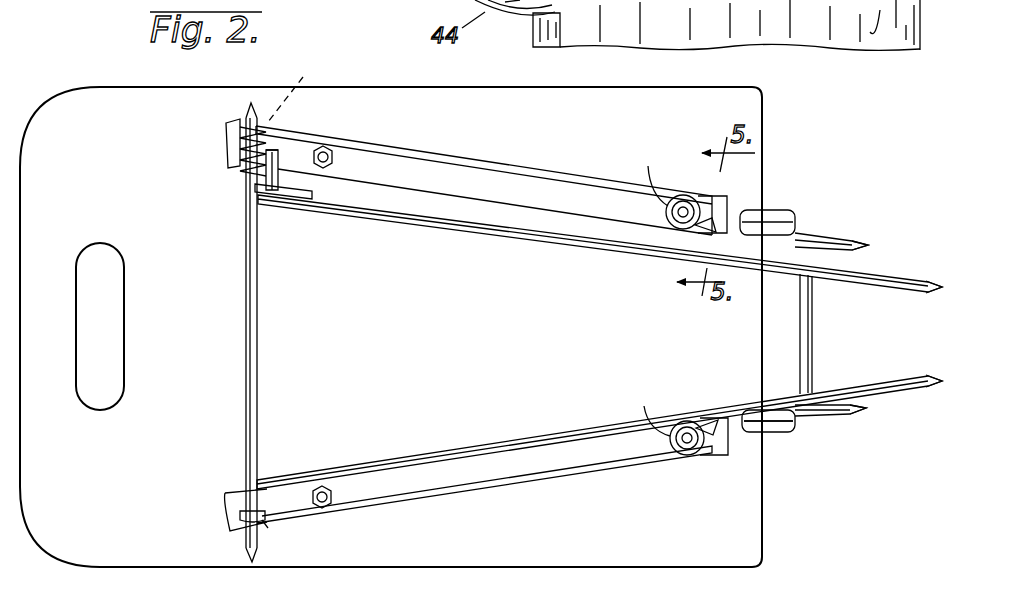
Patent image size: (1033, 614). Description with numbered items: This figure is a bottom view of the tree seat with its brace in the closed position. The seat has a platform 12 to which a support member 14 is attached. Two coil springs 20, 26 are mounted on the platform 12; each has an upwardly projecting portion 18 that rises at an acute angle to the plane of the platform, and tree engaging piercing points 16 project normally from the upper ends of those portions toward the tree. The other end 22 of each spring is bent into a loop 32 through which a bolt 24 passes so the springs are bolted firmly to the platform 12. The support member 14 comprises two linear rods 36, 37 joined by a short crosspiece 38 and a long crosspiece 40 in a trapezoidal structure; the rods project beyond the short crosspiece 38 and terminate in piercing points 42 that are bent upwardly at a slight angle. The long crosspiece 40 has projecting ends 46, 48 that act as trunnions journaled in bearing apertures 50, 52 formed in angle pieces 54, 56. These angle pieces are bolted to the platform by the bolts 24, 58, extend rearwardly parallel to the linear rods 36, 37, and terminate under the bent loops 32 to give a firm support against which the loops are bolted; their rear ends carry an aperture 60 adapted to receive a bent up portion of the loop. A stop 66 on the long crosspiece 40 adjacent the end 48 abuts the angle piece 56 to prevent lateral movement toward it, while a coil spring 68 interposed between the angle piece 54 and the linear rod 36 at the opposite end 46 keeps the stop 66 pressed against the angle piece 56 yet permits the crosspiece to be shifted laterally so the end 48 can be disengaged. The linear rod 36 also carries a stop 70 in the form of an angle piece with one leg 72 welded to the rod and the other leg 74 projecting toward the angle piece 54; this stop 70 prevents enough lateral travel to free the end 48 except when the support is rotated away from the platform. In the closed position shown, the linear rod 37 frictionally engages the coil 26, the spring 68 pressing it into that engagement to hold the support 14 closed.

The platform 12 is at (99, 84).
The support member 14 is at (518, 203).
The piercing points 16 is at (860, 242).
The upwardly projecting portions 18 is at (806, 230).
The coil spring 20 is at (786, 210).
The other end of coil spring 22 is at (728, 198).
The bolt 24 is at (683, 200).
The coil spring 26 is at (782, 436).
The loop 32 is at (640, 287).
The linear rod 36 is at (437, 220).
The linear rod 37 is at (481, 448).
The short crosspiece 38 is at (812, 337).
The long crosspiece 40 is at (256, 318).
The piercing points 42 is at (930, 372).
The projecting end 46 is at (258, 118).
The projecting end 48 is at (257, 563).
The bearing aperture 50 is at (304, 88).
The bearing aperture 52 is at (266, 525).
The angle piece 54 is at (465, 160).
The angle piece 56 is at (553, 479).
The bolt 58 is at (333, 150).
The aperture 60 is at (718, 228).
The stop 66 is at (240, 515).
The coil spring 68 is at (240, 178).
The stop 70 is at (328, 176).
The leg 72 is at (288, 200).
The leg 74 is at (282, 142).